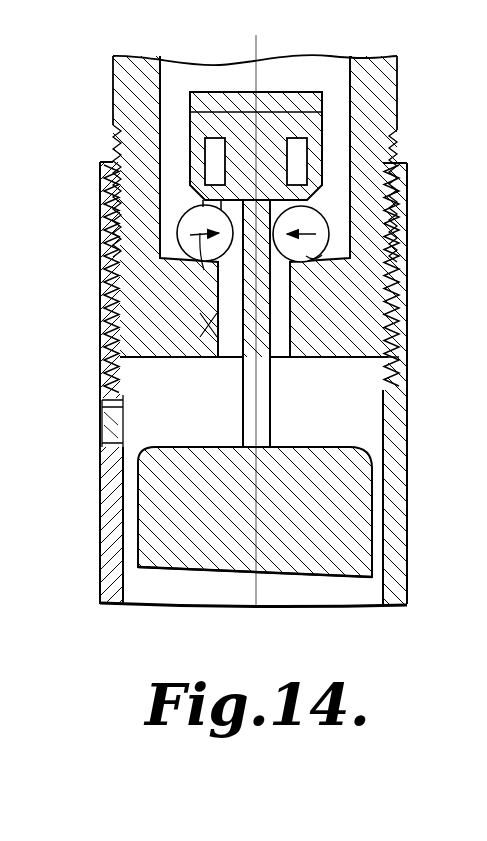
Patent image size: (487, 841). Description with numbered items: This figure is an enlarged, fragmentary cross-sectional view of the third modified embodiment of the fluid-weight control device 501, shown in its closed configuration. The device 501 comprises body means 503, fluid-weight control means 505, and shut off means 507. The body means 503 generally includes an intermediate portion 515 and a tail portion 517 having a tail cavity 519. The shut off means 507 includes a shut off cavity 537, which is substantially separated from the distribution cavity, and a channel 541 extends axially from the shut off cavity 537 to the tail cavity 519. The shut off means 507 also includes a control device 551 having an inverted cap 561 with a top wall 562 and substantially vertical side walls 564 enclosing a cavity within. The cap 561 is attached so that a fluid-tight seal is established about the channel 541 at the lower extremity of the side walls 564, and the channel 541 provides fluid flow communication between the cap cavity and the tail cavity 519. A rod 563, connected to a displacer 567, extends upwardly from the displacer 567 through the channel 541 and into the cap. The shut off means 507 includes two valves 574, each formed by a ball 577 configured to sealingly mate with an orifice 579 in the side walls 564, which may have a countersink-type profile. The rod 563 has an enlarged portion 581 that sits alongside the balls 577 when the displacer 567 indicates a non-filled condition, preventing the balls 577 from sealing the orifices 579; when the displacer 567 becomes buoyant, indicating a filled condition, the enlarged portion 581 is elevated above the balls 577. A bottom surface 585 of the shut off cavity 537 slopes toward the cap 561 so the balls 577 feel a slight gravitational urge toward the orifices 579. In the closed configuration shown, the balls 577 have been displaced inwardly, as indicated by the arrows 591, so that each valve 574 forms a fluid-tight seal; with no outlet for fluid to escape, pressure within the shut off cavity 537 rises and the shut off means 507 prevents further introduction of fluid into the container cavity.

The fluid-weight control device 501 is at (444, 186).
The body means 503 is at (453, 308).
The fluid-weight control means 505 is at (419, 550).
The shut off means 507 is at (107, 152).
The intermediate portion 515 is at (424, 248).
The tail portion 517 is at (87, 583).
The tail cavity 519 is at (140, 446).
The shut off cavity 537 is at (332, 66).
The channel 541 is at (290, 345).
The control device 551 is at (97, 200).
The inverted cap 561 is at (322, 130).
The top wall 562 is at (219, 74).
The rod 563 is at (243, 398).
The side walls 564 is at (190, 118).
The displacer 567 is at (358, 560).
The valve 574 is at (413, 340).
The ball 577 is at (207, 268).
The orifice 579 is at (206, 322).
The enlarged portion 581 is at (270, 186).
The bottom surface 585 is at (326, 262).
The arrows 591 is at (200, 268).